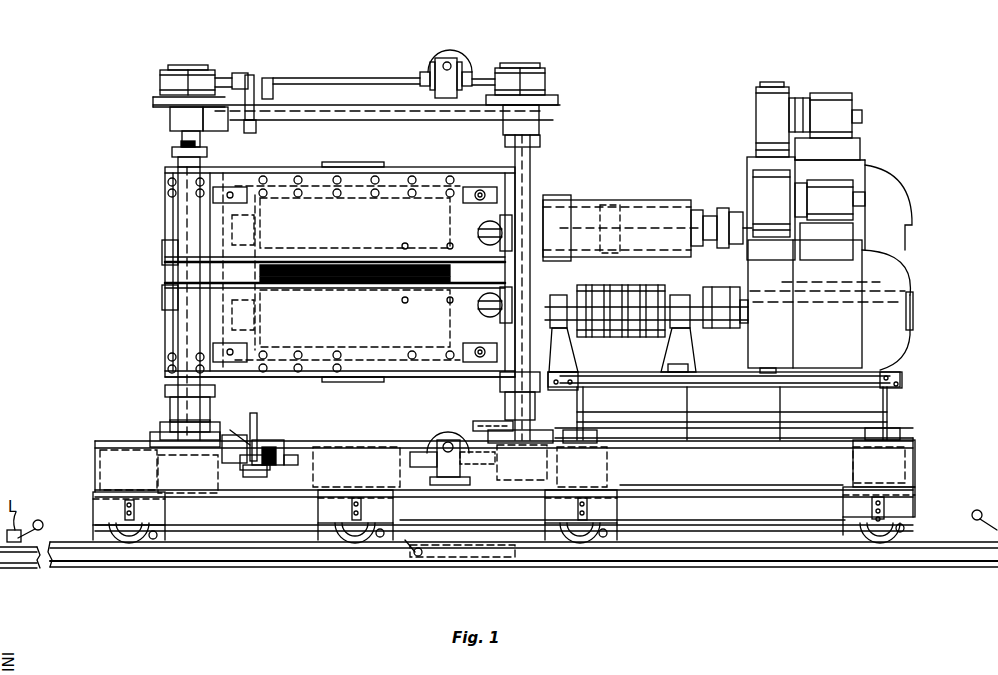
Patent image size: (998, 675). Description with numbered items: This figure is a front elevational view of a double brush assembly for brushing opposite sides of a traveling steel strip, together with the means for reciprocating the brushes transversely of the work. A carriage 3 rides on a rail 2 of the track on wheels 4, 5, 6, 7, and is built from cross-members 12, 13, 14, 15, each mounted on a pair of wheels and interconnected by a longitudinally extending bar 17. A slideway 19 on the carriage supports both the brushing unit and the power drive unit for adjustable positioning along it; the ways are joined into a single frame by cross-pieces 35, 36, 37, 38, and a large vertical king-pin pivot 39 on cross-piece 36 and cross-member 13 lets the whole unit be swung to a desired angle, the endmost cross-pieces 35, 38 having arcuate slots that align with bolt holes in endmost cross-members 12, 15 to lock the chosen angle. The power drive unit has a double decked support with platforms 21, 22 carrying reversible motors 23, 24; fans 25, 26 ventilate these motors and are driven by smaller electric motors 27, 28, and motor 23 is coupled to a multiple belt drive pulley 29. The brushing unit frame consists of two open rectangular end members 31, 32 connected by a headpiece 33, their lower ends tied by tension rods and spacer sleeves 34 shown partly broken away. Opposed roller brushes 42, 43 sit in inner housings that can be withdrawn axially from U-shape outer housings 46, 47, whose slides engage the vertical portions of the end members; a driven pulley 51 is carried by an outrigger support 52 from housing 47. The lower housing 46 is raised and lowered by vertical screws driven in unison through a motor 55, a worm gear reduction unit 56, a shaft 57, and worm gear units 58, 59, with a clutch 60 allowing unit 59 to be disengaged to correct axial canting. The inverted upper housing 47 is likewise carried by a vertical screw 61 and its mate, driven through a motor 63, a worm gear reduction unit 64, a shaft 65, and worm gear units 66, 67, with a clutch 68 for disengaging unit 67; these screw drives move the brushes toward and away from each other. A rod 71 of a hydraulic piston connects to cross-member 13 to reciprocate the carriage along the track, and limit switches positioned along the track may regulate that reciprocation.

The rail 2 is at (918, 550).
The carriage 3 is at (915, 490).
The wheel 4 is at (130, 538).
The wheel 5 is at (360, 538).
The wheel 6 is at (578, 540).
The wheel 7 is at (882, 538).
The cross-member 12 is at (93, 510).
The cross-member 13 is at (335, 512).
The cross-member 14 is at (605, 508).
The cross-member 15 is at (905, 503).
The longitudinally extending bar 17 is at (742, 520).
The slideway 19 is at (705, 472).
The platform 21 is at (895, 374).
The platform 22 is at (880, 285).
The reversible motor 23 is at (885, 332).
The reversible motor 24 is at (888, 194).
The fan 25 is at (765, 194).
The fan 26 is at (757, 113).
The electric motor 27 is at (830, 220).
The electric motor 28 is at (825, 126).
The multiple belt drive pulley 29 is at (615, 334).
The end member 31 is at (178, 212).
The end member 32 is at (532, 140).
The headpiece 33 is at (348, 105).
The tension rods and spacer sleeves 34 is at (483, 420).
The cross-piece 35 is at (122, 441).
The cross-piece 36 is at (282, 497).
The cross-piece 37 is at (608, 475).
The cross-piece 38 is at (879, 455).
The king-pin pivot 39 is at (358, 447).
The roller brush 42 is at (262, 280).
The roller brush 43 is at (262, 268).
The outer housing 46 is at (306, 378).
The outer housing 47 is at (420, 166).
The driven pulley 51 is at (606, 202).
The outrigger support 52 is at (633, 222).
The motor 55 is at (436, 435).
The worm gear reduction unit 56 is at (447, 486).
The shaft 57 is at (290, 455).
The worm gear unit 58 is at (532, 465).
The worm gear unit 59 is at (197, 470).
The clutch 60 is at (256, 425).
The vertical screw 61 is at (172, 149).
The motor 63 is at (448, 50).
The worm gear reduction unit 64 is at (458, 62).
The shaft 65 is at (318, 78).
The worm gear unit 66 is at (548, 82).
The worm gear unit 67 is at (165, 82).
The clutch 68 is at (240, 72).
The rod 71 is at (430, 557).